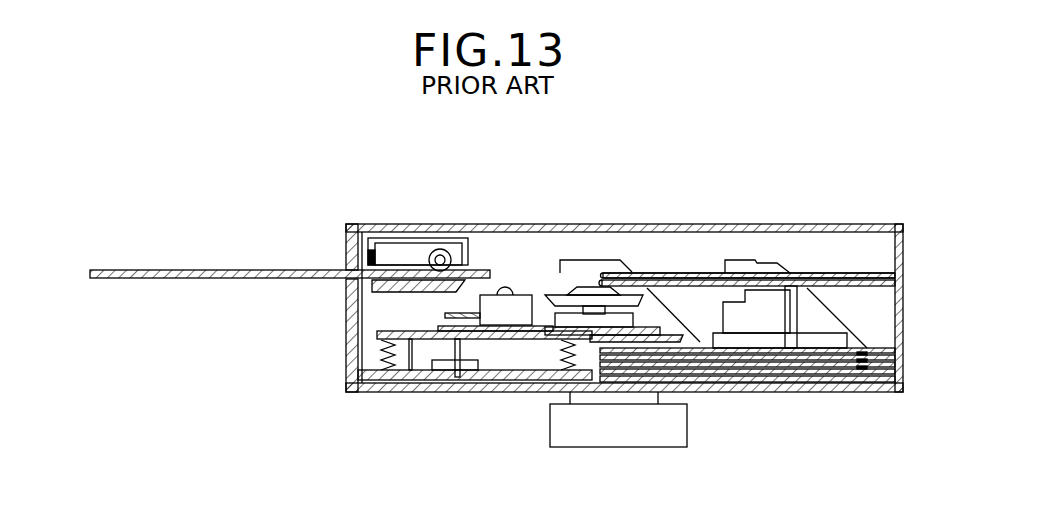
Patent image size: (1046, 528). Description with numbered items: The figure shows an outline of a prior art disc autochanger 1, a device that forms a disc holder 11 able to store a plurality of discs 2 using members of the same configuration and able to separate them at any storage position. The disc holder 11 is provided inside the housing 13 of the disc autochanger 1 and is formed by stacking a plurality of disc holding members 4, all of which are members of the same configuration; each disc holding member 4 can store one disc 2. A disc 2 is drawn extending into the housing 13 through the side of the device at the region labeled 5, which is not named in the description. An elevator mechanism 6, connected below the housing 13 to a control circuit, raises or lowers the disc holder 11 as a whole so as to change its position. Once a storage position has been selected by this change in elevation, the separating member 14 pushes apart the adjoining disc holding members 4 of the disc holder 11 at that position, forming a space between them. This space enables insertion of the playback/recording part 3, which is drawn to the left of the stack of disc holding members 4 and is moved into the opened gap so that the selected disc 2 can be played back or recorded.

The disc autochanger 1 is at (644, 147).
The disc 2 is at (203, 270).
The playback/recording part 3 is at (521, 294).
The disc holding member 4 is at (878, 348).
The card insertion opening 5 is at (335, 218).
The elevator mechanism 6 is at (828, 392).
The disc holder 11 is at (848, 248).
The housing 13 is at (652, 225).
The separating member 14 is at (762, 298).